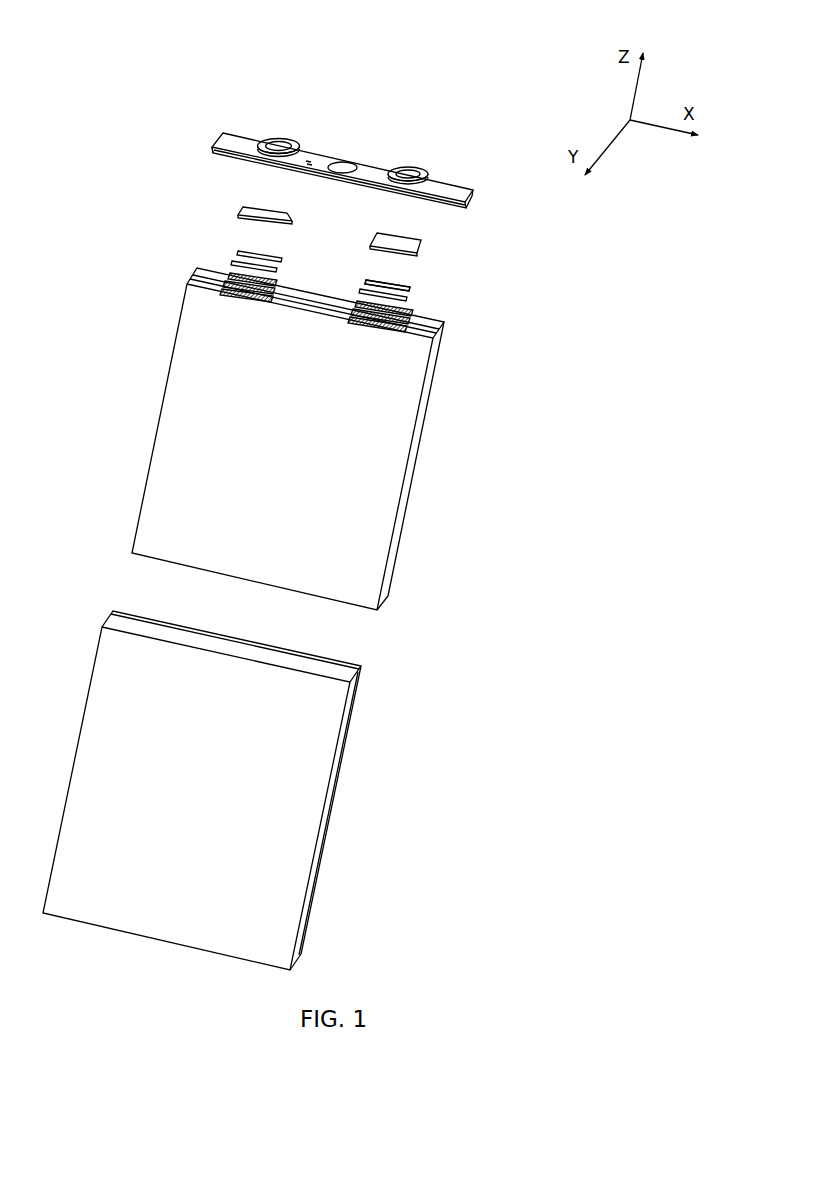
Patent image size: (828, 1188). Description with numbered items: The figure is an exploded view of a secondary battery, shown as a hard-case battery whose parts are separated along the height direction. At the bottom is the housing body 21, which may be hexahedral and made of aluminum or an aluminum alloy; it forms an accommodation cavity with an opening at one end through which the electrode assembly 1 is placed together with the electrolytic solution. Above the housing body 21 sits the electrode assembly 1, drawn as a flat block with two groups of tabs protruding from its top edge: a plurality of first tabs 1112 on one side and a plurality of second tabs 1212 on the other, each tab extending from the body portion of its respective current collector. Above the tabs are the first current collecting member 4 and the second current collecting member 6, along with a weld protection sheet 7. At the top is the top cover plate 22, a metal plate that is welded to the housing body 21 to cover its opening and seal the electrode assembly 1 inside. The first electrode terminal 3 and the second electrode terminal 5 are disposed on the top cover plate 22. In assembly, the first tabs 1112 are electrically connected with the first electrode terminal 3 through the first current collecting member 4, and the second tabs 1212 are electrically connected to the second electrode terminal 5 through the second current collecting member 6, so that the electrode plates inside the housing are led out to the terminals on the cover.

The electrode assembly 1 is at (408, 448).
The housing body 21 is at (320, 790).
The top cover plate 22 is at (363, 165).
The first electrode terminal 3 is at (417, 172).
The second electrode terminal 5 is at (273, 143).
The first current collecting member 4 is at (412, 243).
The second current collecting member 6 is at (257, 206).
The weld protection sheet 7 is at (373, 282).
The first tab 1112 is at (410, 317).
The second tab 1212 is at (275, 297).